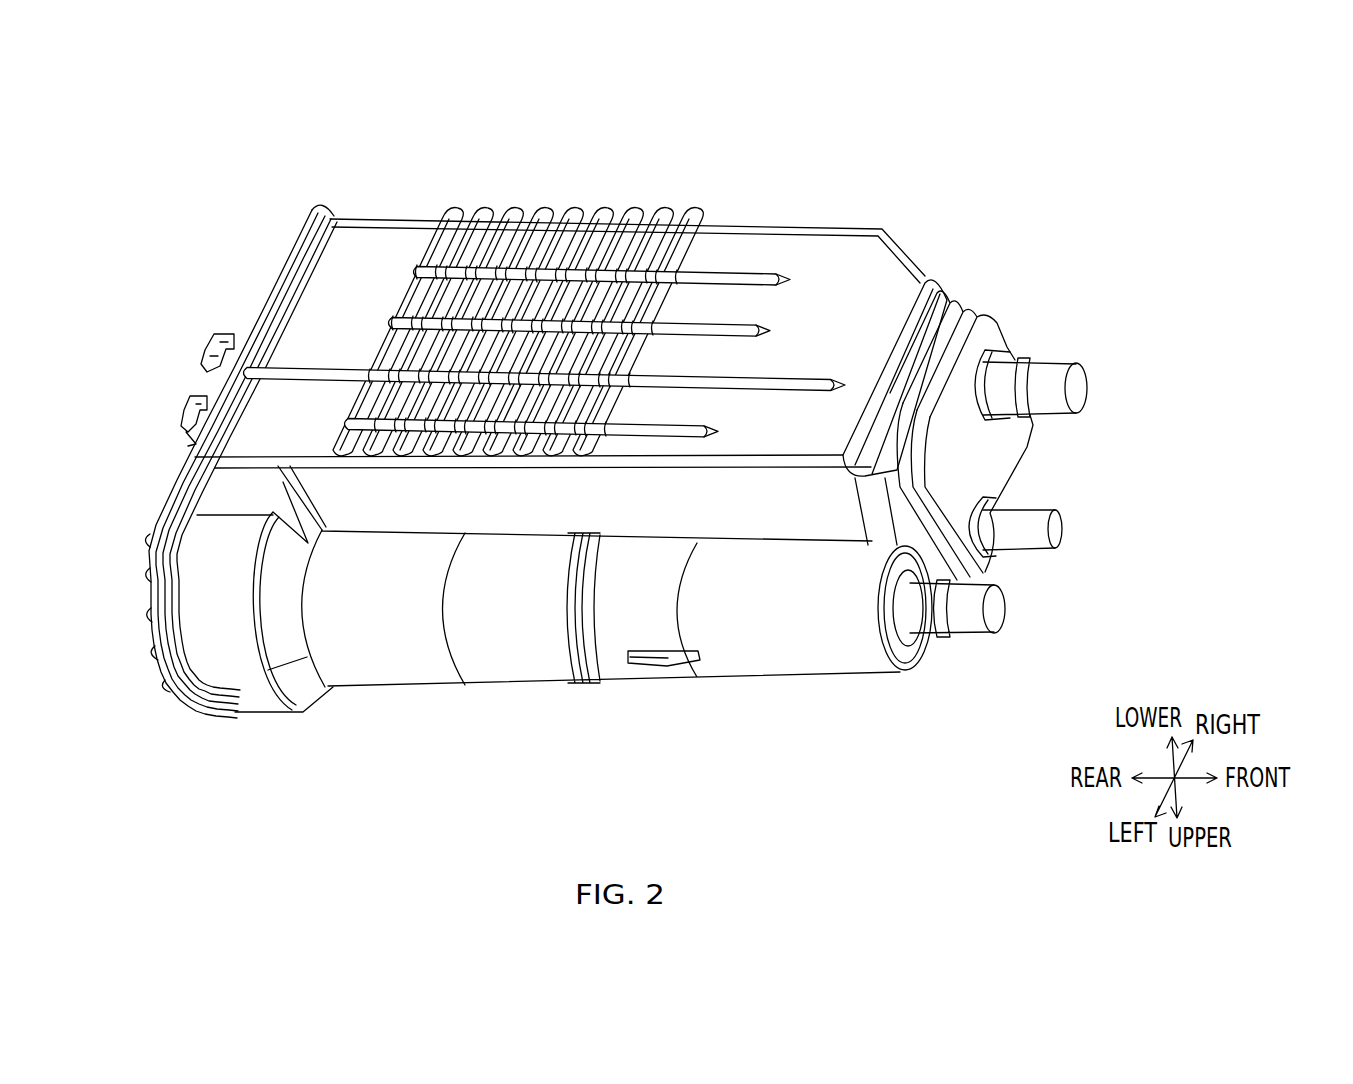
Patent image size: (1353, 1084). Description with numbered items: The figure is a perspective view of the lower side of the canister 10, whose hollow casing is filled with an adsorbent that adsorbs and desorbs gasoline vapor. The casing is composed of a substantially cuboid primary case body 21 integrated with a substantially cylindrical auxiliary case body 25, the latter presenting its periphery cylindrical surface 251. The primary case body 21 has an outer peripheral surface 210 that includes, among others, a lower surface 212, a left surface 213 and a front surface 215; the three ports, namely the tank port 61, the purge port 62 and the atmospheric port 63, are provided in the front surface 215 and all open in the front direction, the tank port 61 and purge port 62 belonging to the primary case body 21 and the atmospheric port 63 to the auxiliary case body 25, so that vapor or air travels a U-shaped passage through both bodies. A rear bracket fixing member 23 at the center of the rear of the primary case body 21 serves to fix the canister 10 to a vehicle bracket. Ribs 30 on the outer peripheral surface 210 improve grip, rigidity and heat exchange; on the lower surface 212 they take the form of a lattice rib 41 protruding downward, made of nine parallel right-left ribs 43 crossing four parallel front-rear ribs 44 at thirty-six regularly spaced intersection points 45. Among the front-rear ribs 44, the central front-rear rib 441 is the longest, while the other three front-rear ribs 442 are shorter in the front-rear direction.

The canister 10 is at (1085, 173).
The primary case body 21 is at (760, 245).
The rear bracket fixing member 23 is at (212, 350).
The auxiliary case body 25 is at (745, 655).
The ribs 30 is at (630, 420).
The lattice rib 41 is at (607, 429).
The right-left ribs 43 is at (694, 210).
The front-rear ribs 44 is at (695, 495).
The intersection points 45 is at (615, 375).
The tank port 61 is at (1090, 386).
The purge port 62 is at (1064, 528).
The atmospheric port 63 is at (1006, 610).
The outer peripheral surface 210 is at (663, 445).
The lower surface 212 is at (370, 252).
The left surface 213 is at (812, 500).
The front surface 215 is at (1010, 455).
The periphery cylindrical surface 251 is at (498, 647).
The front-rear rib 441 is at (720, 492).
The front-rear ribs 442 is at (633, 435).